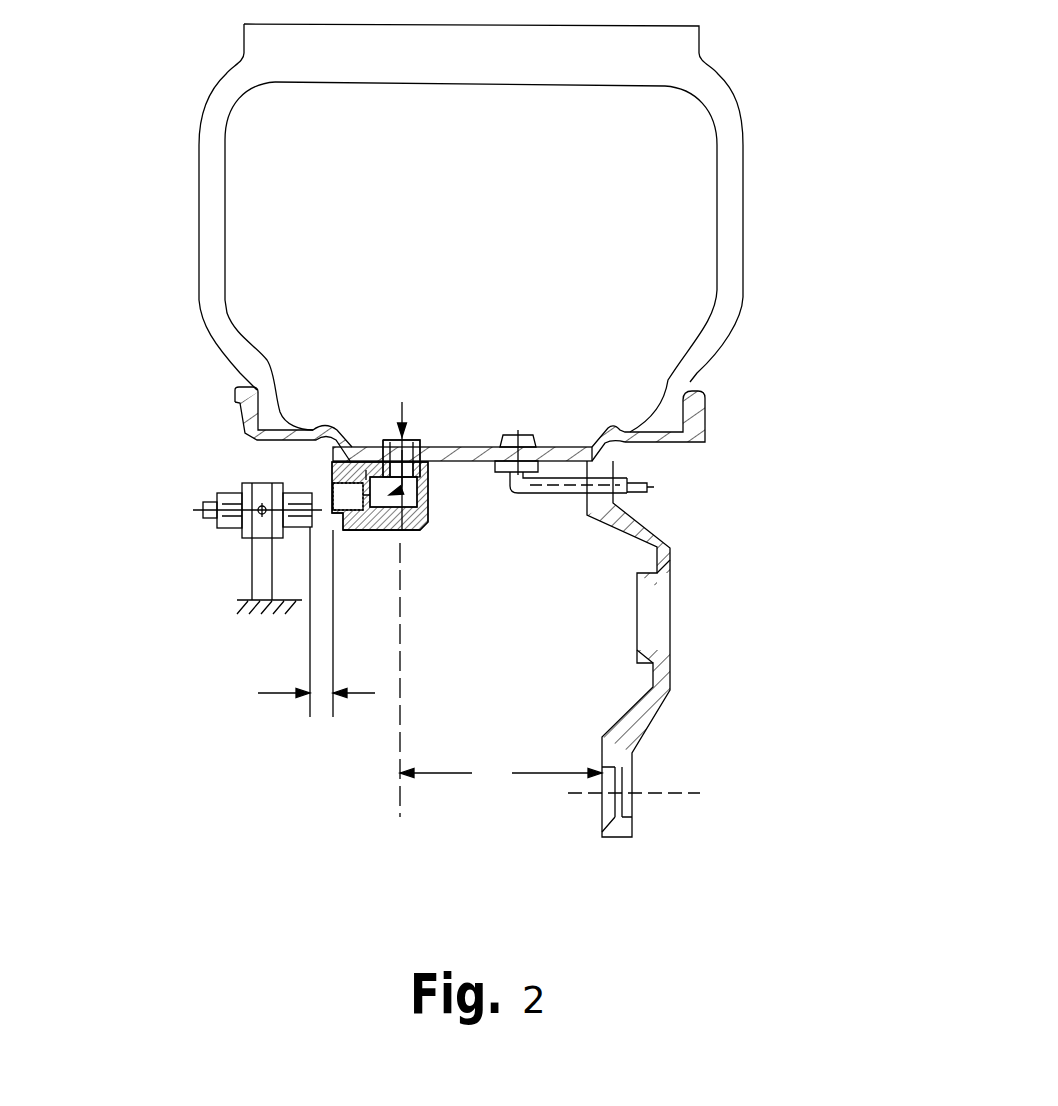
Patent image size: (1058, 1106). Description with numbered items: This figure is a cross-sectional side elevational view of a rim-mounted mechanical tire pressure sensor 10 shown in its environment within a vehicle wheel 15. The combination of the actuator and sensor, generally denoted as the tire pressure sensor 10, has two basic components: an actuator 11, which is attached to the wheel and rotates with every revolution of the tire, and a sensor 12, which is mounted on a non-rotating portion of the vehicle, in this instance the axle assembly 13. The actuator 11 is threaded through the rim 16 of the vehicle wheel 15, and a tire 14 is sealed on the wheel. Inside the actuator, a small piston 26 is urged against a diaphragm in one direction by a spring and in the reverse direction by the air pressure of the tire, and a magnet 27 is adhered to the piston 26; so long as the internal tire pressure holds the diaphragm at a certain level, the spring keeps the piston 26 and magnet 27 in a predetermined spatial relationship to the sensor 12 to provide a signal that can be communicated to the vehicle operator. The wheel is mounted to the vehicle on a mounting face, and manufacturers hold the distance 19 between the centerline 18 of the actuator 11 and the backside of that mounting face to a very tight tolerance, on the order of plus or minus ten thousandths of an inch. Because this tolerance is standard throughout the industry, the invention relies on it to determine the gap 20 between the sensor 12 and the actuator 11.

The tire pressure sensor 10 is at (218, 549).
The actuator 11 is at (425, 522).
The sensor 12 is at (215, 493).
The axle assembly 13 is at (269, 566).
The tire 14 is at (742, 270).
The vehicle wheel 15 is at (674, 665).
The rim 16 is at (333, 377).
The centerline 18 is at (400, 635).
The distance 19 is at (501, 774).
The gap 20 is at (300, 694).
The piston 26 is at (380, 529).
The magnet 27 is at (360, 471).